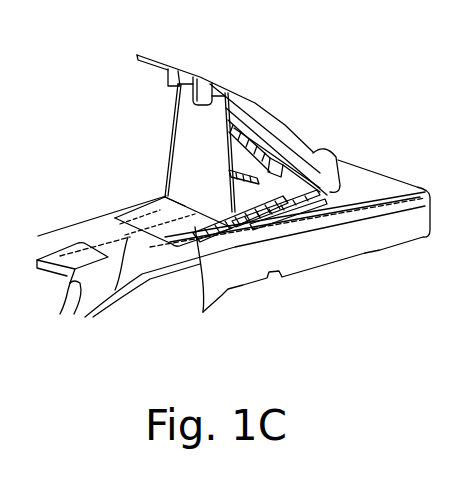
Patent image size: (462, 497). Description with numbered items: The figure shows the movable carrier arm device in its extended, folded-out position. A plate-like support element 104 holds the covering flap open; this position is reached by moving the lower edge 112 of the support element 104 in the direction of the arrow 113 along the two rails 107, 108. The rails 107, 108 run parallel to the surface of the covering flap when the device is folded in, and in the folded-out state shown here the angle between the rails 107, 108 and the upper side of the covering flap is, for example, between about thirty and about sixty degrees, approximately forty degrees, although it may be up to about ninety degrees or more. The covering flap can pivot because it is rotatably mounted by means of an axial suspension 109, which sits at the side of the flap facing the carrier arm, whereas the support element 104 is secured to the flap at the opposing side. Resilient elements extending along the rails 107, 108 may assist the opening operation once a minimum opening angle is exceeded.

The plate-like support element 104 is at (185, 147).
The rail 107 is at (243, 157).
The rail 108 is at (285, 207).
The axial suspension 109 is at (328, 187).
The lower edge 112 is at (210, 304).
The arrow 113 is at (103, 290).